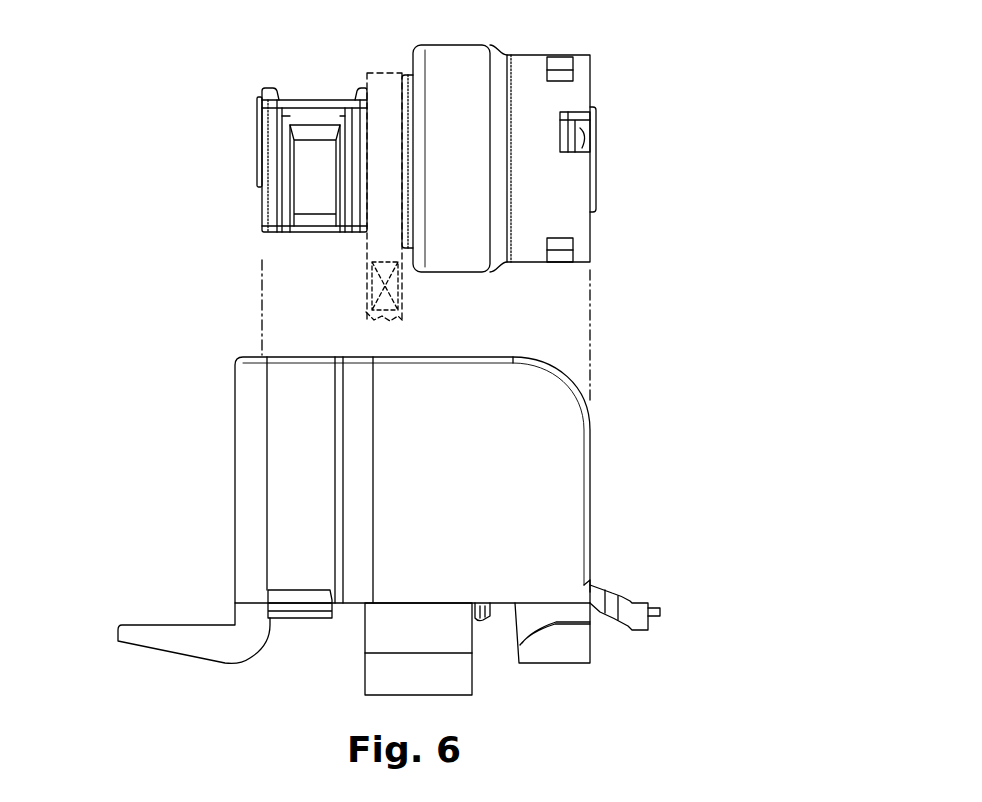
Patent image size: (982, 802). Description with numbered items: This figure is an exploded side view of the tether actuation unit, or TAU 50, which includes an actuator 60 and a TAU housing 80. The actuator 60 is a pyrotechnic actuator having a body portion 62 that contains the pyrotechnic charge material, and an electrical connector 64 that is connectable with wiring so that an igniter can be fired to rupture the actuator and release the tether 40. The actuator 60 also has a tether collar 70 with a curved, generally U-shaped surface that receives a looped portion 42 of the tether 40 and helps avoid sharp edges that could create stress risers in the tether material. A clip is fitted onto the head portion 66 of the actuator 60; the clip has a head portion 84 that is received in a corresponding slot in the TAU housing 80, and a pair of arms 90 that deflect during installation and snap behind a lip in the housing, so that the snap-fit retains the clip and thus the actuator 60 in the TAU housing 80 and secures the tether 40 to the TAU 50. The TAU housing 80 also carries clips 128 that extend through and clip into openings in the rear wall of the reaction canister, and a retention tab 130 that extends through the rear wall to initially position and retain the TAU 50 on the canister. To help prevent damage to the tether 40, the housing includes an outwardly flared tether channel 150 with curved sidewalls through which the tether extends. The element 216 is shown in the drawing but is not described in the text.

The tether actuation unit 50 is at (148, 100).
The head portion 66 is at (305, 65).
The head portion of clip 84 is at (270, 93).
The arms 90 is at (318, 172).
The tether collar 70 is at (383, 106).
The actuator 60 is at (470, 93).
The body portion 62 is at (469, 120).
The electrical connector 64 is at (596, 180).
The looped portion of tether 42 is at (373, 238).
The tether 40 is at (404, 310).
The TAU housing 80 is at (272, 205).
The foot 216 is at (300, 613).
The retention tab 130 is at (188, 642).
The tether channel 150 is at (397, 670).
The clips 128 is at (572, 644).